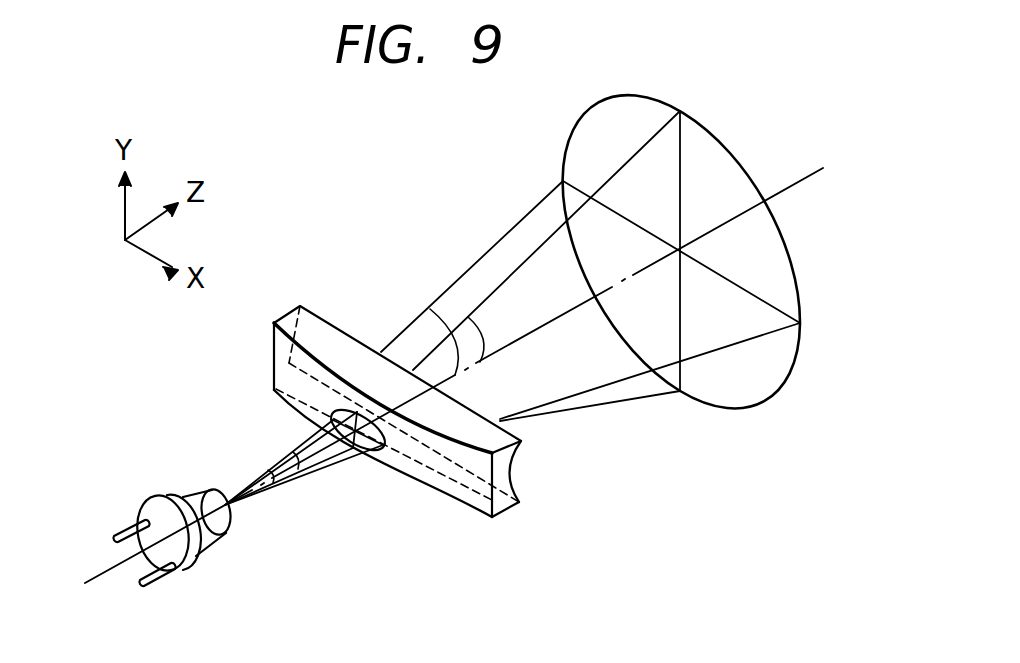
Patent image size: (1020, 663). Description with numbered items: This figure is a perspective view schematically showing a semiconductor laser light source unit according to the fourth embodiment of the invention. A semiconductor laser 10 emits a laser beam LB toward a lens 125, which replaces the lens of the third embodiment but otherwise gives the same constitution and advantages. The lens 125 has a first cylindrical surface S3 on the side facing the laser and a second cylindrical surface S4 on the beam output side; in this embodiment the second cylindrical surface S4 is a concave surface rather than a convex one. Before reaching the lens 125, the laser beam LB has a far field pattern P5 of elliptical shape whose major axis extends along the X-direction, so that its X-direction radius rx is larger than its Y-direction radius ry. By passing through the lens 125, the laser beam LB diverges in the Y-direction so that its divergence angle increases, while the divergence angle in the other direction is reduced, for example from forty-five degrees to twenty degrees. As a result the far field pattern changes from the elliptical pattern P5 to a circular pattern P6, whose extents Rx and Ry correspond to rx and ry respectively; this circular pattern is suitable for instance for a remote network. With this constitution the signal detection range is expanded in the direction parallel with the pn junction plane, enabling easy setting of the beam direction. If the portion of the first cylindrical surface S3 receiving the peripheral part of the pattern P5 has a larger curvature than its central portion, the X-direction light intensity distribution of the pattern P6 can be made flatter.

The semiconductor laser 10 is at (218, 540).
The laser beam LB is at (283, 487).
The lens 125 is at (432, 462).
The first cylindrical surface S3 is at (472, 500).
The second cylindrical surface S4 is at (516, 473).
The far field pattern P5 is at (376, 498).
The X-direction radius of far field pattern rx is at (374, 452).
The Y-direction radius of far field pattern ry is at (338, 445).
The circular pattern P6 is at (682, 271).
The X-direction radius of circular pattern Rx is at (753, 290).
The Y-direction radius of circular pattern Ry is at (680, 170).